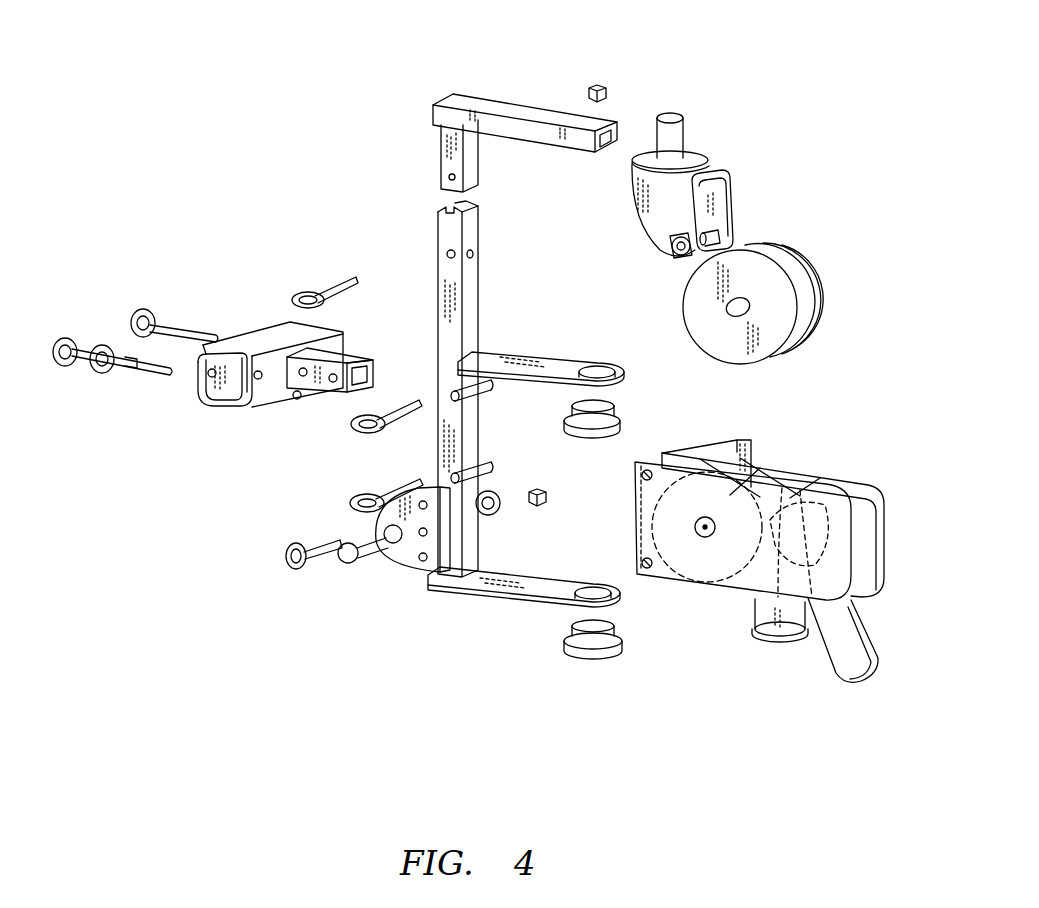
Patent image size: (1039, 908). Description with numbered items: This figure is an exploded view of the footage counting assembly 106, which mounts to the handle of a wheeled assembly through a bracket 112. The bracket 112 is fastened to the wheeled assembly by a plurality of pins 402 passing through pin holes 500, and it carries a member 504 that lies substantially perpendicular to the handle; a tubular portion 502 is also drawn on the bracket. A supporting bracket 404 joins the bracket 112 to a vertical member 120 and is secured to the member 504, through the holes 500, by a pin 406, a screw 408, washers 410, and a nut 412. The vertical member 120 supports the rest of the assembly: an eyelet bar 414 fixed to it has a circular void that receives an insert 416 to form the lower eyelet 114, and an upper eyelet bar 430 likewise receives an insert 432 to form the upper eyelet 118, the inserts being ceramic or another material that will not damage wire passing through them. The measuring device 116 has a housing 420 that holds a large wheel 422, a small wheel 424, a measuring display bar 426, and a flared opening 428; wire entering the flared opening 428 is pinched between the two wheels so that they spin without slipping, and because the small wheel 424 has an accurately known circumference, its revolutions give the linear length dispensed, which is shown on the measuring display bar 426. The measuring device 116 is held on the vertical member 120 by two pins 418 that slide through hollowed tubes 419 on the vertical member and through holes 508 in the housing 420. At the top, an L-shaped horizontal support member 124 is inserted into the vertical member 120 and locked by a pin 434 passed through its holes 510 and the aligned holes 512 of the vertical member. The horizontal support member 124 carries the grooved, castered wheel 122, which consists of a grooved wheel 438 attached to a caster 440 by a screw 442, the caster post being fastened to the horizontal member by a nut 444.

The footage counting assembly 106 is at (178, 70).
The bracket 112 is at (197, 398).
The lower eyelet 114 is at (450, 610).
The measuring device 116 is at (858, 450).
The upper eyelet 118 is at (556, 340).
The vertical member 120 is at (438, 252).
The grooved, castered wheel 122 is at (818, 210).
The horizontal support member 124 is at (491, 98).
The pins 402 is at (141, 308).
The supporting bracket 404 is at (376, 525).
The pin 406 is at (290, 562).
The screw 408 is at (349, 564).
The washers 410 is at (395, 546).
The nut 412 is at (548, 497).
The eyelet bar 414 is at (505, 598).
The insert 416 is at (598, 660).
The pins 418 is at (362, 500).
The hollowed tubes 419 is at (492, 468).
The housing 420 is at (692, 452).
The large wheel 422 is at (705, 570).
The small wheel 424 is at (858, 490).
The measuring display bar 426 is at (862, 652).
The flared opening 428 is at (780, 642).
The upper eyelet bar 430 is at (500, 350).
The insert 432 is at (625, 415).
The pin 434 is at (322, 295).
The grooved wheel 438 is at (820, 300).
The caster 440 is at (726, 182).
The screw 442 is at (718, 232).
The nut 444 is at (612, 92).
The pin holes 500 is at (211, 379).
The receiver tube 502 is at (350, 352).
The member 504 is at (332, 383).
The holes 508 is at (641, 474).
The holes 510 is at (441, 178).
The holes 512 is at (470, 250).